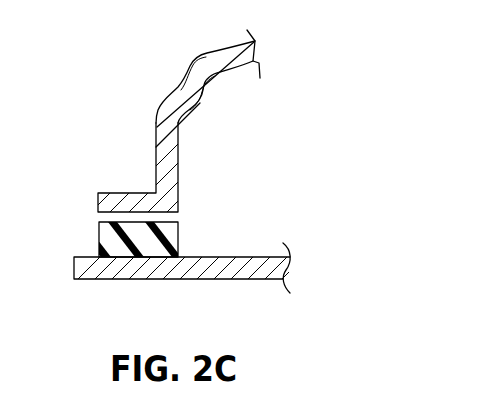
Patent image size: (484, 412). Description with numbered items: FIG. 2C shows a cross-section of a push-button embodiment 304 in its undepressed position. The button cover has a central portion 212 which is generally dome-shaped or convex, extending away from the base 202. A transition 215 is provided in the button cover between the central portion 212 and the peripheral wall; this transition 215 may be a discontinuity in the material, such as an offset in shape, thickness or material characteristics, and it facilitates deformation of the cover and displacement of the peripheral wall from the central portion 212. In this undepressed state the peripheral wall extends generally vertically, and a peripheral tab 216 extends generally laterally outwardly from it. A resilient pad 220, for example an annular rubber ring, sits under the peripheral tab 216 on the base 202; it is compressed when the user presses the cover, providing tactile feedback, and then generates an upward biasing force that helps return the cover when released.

The spring contact assembly 304 is at (110, 87).
The central portion 212 is at (210, 61).
The transition 215 is at (183, 85).
The peripheral tab 216 is at (128, 203).
The resilient pad 220 is at (121, 247).
The base 202 is at (223, 265).